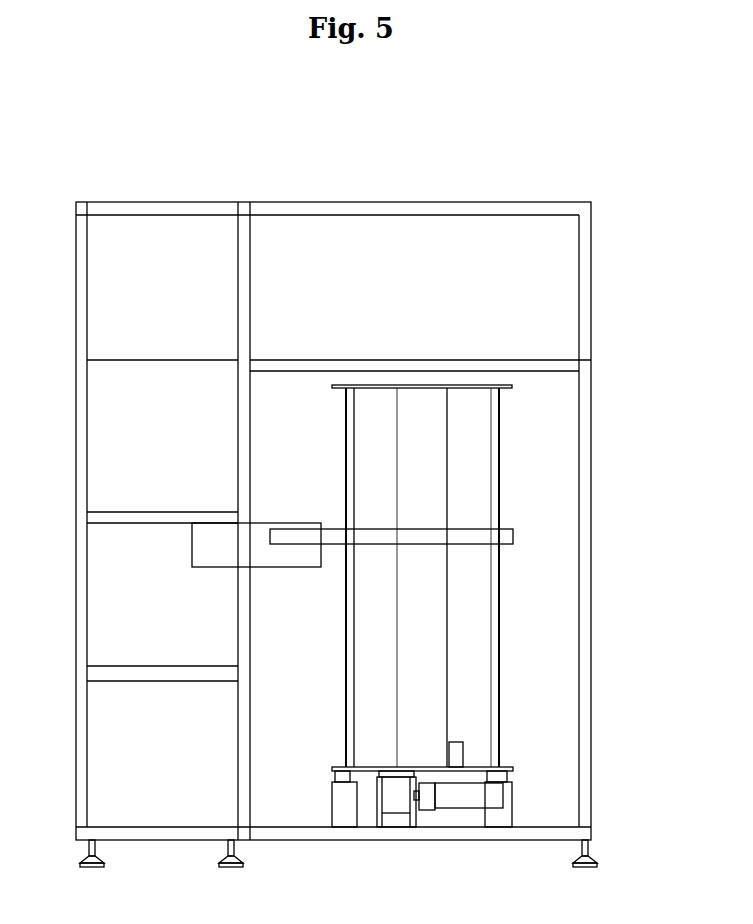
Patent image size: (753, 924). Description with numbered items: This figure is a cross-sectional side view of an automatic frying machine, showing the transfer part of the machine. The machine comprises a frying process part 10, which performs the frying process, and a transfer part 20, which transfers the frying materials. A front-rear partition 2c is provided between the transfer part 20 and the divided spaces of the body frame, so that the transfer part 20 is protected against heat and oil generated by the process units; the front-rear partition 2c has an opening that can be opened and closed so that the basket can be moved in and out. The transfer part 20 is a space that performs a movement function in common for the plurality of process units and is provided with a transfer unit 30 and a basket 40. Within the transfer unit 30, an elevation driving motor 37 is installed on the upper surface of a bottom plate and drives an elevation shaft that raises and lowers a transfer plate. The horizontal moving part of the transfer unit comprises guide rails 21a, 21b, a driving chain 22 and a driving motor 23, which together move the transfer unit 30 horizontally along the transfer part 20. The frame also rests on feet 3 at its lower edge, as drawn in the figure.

The frying process part 10 is at (176, 186).
The transfer part 20 is at (513, 190).
The front-rear partition 2c is at (244, 279).
The leveling foot 3 is at (93, 867).
The basket 40 is at (263, 555).
The transfer unit 30 is at (515, 704).
The elevation driving motor 37 is at (463, 745).
The guide rail 21b is at (496, 757).
The driving chain 22 is at (397, 801).
The driving motor 23 is at (465, 797).
The guide rail 21a is at (507, 780).